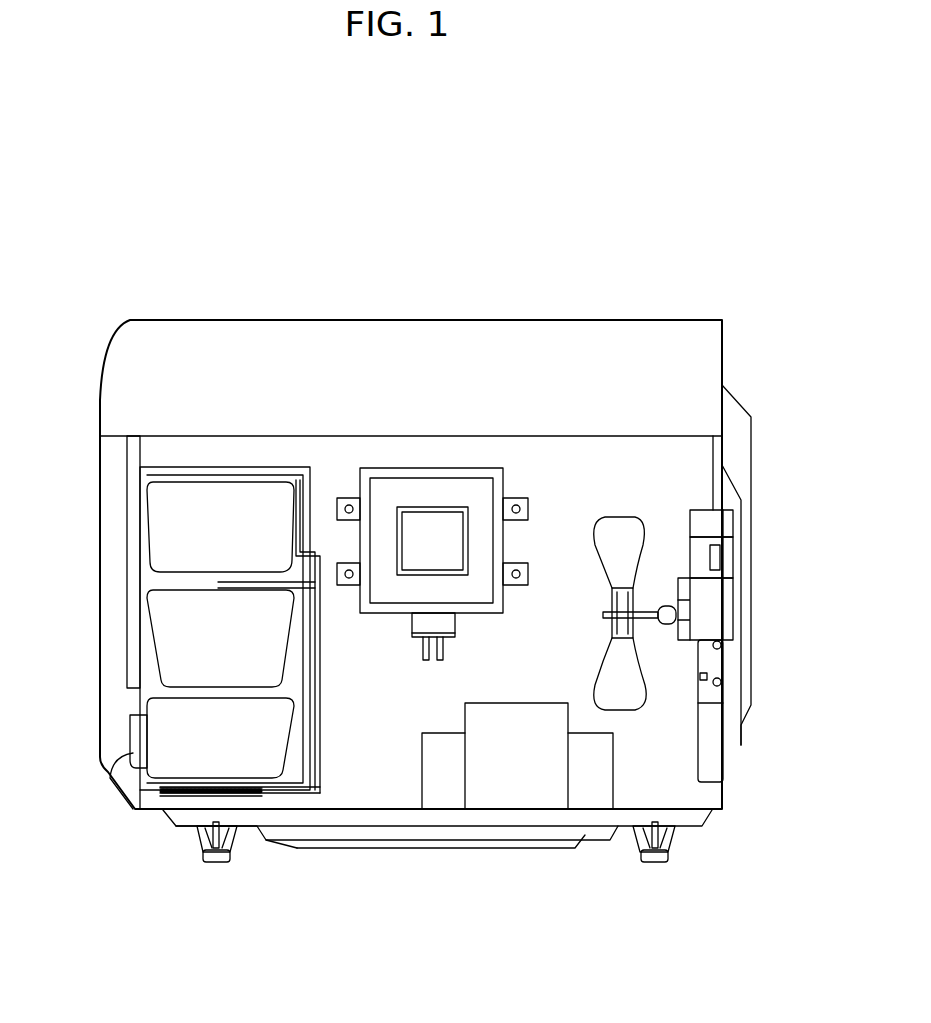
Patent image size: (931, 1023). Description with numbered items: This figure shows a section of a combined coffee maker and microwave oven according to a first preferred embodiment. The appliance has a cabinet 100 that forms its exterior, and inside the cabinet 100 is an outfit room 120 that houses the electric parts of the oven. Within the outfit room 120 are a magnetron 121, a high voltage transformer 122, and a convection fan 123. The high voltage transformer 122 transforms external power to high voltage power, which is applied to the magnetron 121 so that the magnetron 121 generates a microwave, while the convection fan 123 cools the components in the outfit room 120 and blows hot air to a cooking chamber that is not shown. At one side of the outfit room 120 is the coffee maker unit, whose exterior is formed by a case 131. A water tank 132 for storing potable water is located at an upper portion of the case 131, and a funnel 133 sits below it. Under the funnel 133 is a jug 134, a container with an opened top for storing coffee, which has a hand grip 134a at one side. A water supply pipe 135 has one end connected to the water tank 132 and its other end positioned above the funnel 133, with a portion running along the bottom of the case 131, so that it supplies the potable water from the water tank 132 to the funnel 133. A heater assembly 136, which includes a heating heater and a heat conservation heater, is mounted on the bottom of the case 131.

The cabinet 100 is at (724, 345).
The outfit room 120 is at (580, 490).
The magnetron 121 is at (437, 530).
The high voltage transformer 122 is at (513, 780).
The convection fan 123 is at (626, 692).
The case 131 is at (235, 470).
The water tank 132 is at (170, 522).
The funnel 133 is at (165, 630).
The jug 134 is at (165, 728).
The hand grip 134a is at (120, 763).
The water supply pipe 135 is at (320, 570).
The heater assembly 136 is at (162, 805).